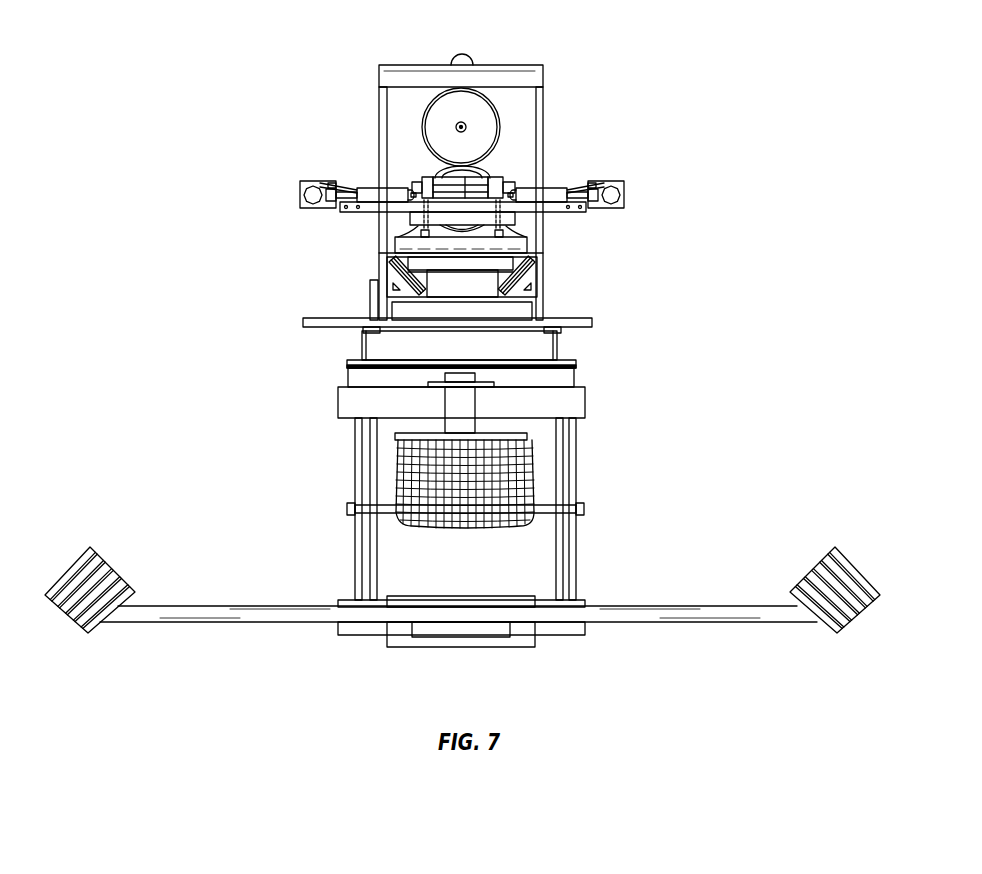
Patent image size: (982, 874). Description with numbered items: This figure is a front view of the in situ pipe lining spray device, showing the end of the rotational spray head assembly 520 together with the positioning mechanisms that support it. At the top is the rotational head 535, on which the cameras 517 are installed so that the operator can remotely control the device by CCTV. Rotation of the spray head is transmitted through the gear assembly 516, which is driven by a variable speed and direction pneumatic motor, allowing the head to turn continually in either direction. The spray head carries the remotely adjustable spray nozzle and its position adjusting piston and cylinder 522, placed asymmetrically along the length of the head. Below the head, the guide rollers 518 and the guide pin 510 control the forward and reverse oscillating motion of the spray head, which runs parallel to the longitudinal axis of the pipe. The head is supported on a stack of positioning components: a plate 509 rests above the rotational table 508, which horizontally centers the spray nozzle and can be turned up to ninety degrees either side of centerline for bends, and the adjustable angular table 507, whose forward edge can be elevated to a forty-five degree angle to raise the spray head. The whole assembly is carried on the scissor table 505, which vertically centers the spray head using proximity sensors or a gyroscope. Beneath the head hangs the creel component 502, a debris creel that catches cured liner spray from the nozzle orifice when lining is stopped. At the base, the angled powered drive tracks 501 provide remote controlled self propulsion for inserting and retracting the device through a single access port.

The drive tracks 501 is at (80, 550).
The creel component 502 is at (397, 465).
The scissor table 505 is at (362, 540).
The adjustable angular table 507 is at (567, 372).
The rotational table 508 is at (548, 353).
The mounting plate 509 is at (303, 322).
The guide pin 510 is at (375, 295).
The gear assembly 516 is at (437, 128).
The cameras 517 is at (462, 58).
The guide rollers 518 is at (533, 273).
The rotational spray head assembly 520 is at (550, 212).
The position adjusting piston and cylinder 522 is at (372, 192).
The rotational head 535 is at (522, 77).